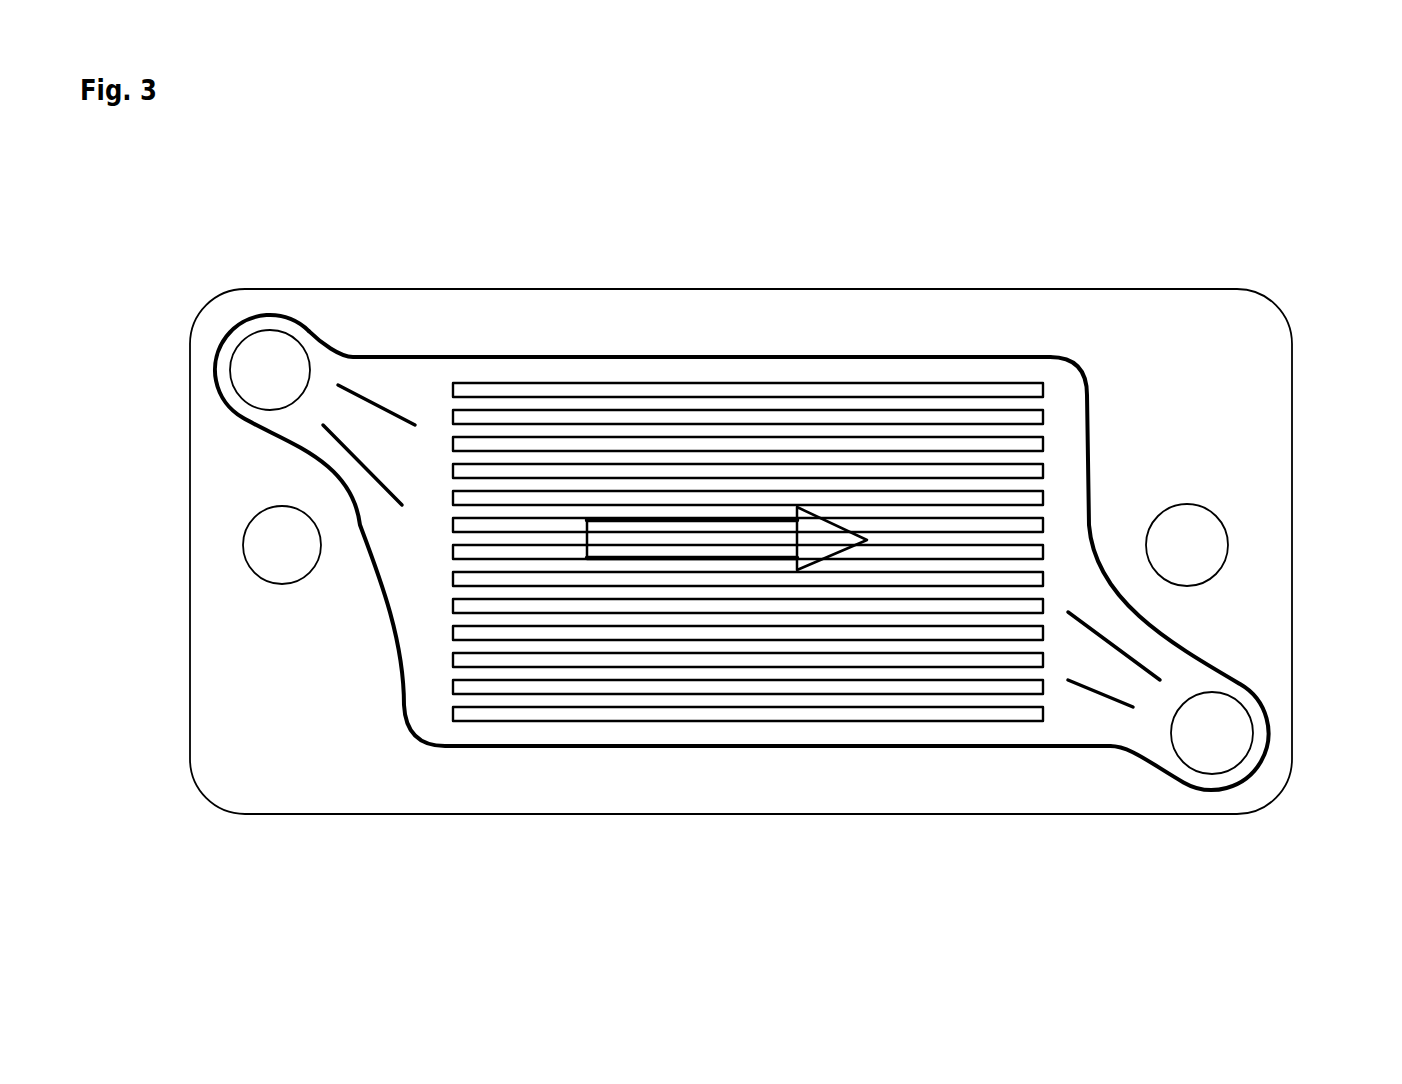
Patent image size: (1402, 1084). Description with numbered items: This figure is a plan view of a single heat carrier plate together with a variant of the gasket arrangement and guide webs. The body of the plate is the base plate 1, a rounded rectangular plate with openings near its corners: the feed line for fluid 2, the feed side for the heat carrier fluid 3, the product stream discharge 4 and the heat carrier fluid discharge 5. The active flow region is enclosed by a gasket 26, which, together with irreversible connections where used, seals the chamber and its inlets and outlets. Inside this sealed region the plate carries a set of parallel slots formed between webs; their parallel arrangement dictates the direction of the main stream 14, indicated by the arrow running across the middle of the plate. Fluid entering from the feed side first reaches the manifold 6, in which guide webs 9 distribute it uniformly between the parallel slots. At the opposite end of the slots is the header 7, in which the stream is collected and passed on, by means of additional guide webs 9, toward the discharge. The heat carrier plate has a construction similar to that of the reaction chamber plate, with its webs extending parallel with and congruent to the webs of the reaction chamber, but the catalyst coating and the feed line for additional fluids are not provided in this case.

The base plate 1 is at (258, 749).
The feed line for fluid 1 2 is at (288, 536).
The feed side for heat carrier fluid 3 is at (272, 372).
The product stream discharge 4 is at (1198, 548).
The heat carrier fluid discharge 5 is at (1218, 730).
The manifold 6 is at (389, 538).
The header 7 is at (1085, 588).
The guide webs 9 is at (326, 424).
The direction of main stream 14 is at (727, 538).
The gasket 26 is at (598, 355).